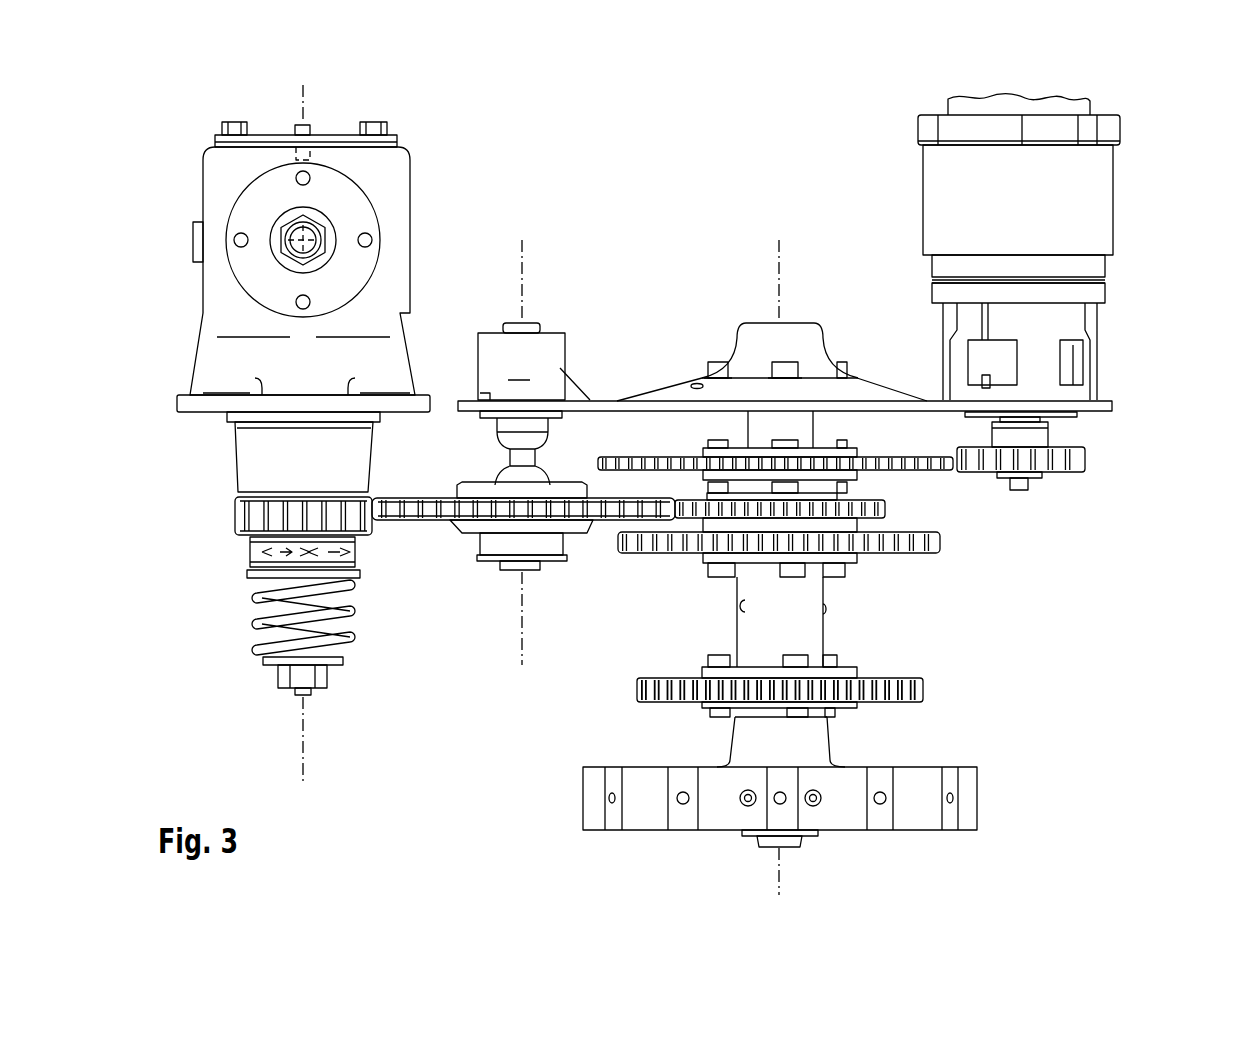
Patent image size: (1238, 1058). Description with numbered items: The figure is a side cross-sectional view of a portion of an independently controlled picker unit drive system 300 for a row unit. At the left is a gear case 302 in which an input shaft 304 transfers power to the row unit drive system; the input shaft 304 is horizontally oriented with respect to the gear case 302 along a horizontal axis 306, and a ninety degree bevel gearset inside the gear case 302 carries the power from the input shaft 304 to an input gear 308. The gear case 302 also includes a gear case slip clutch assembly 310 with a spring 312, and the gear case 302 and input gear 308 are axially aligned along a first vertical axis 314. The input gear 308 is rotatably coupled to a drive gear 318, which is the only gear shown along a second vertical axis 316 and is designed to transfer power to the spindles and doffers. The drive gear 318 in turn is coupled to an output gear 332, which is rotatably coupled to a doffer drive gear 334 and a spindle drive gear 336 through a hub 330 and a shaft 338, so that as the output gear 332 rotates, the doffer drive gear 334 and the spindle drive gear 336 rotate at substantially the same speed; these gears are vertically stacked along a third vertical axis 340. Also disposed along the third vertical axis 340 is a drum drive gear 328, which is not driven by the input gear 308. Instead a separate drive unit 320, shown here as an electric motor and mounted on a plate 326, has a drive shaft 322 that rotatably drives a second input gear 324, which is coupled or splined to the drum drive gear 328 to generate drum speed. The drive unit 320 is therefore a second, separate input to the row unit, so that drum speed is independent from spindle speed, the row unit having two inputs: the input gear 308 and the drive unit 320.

The drive assembly 300 is at (1138, 180).
The gear case 302 is at (218, 293).
The input shaft 304 is at (320, 240).
The horizontal axis 306 is at (288, 222).
The input gear 308 is at (238, 512).
The gear case slip clutch assembly 310 is at (207, 660).
The spring 312 is at (262, 620).
The first vertical axis 314 is at (303, 760).
The second vertical axis 316 is at (520, 660).
The drive gear 318 is at (407, 522).
The drive unit 320 is at (933, 178).
The drive shaft 322 is at (1045, 408).
The second input gear 324 is at (1084, 458).
The mounting plate 326 is at (662, 396).
The drum drive gear 328 is at (908, 455).
The hub 330 is at (852, 527).
The output gear 332 is at (884, 506).
The doffer drive gear 334 is at (942, 545).
The spindle drive gear 336 is at (924, 690).
The shaft 338 is at (818, 600).
The third vertical axis 340 is at (779, 873).